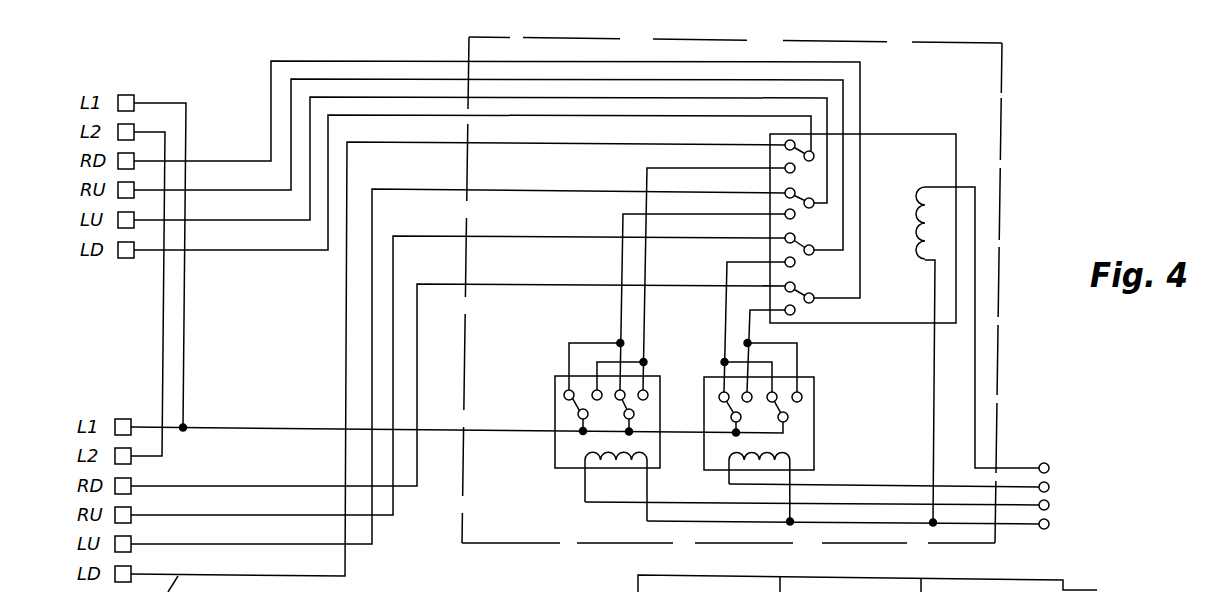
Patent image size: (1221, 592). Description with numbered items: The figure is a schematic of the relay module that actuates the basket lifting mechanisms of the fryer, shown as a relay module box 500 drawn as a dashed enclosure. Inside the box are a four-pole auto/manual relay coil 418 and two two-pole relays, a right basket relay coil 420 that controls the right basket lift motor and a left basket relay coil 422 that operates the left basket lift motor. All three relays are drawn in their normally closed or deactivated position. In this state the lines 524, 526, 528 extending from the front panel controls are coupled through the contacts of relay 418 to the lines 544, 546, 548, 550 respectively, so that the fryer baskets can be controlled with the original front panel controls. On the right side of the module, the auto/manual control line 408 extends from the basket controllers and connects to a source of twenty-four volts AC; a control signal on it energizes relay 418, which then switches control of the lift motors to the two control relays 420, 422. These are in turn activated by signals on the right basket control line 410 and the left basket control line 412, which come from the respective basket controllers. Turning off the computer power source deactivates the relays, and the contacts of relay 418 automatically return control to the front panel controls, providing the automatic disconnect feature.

The relay module box 500 is at (1003, 71).
The auto/manual relay coil 418 is at (957, 160).
The right basket relay coil 420 is at (815, 428).
The left basket relay coil 422 is at (563, 418).
The auto/manual control line 408 is at (1012, 466).
The right basket control line 410 is at (1020, 487).
The left basket control line 412 is at (1020, 505).
The line 524 is at (190, 486).
The line 526 is at (289, 515).
The line 528 is at (313, 545).
The line 544 is at (271, 88).
The line 546 is at (254, 191).
The line 548 is at (283, 221).
The line 550 is at (236, 251).